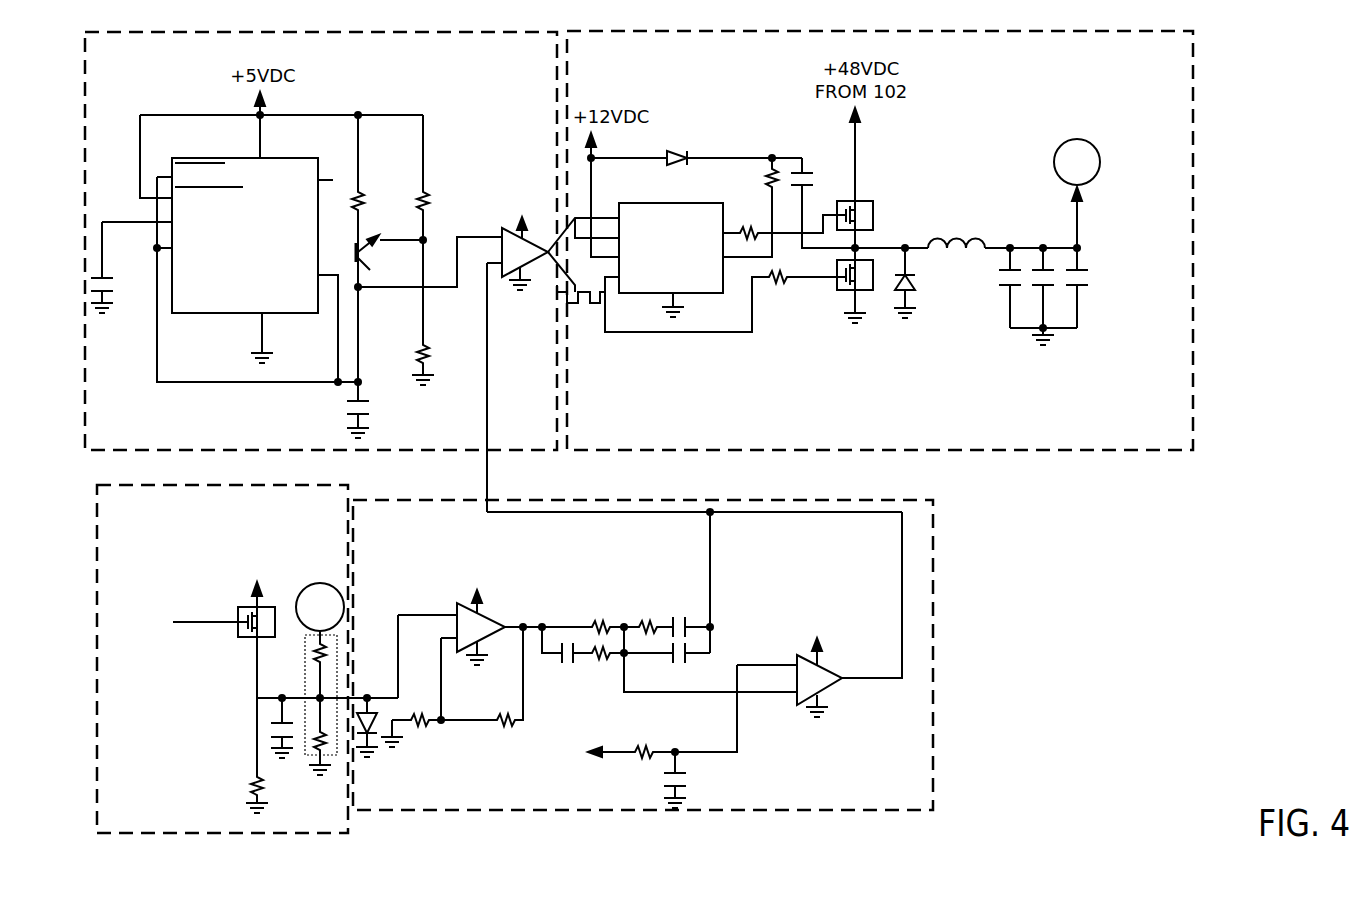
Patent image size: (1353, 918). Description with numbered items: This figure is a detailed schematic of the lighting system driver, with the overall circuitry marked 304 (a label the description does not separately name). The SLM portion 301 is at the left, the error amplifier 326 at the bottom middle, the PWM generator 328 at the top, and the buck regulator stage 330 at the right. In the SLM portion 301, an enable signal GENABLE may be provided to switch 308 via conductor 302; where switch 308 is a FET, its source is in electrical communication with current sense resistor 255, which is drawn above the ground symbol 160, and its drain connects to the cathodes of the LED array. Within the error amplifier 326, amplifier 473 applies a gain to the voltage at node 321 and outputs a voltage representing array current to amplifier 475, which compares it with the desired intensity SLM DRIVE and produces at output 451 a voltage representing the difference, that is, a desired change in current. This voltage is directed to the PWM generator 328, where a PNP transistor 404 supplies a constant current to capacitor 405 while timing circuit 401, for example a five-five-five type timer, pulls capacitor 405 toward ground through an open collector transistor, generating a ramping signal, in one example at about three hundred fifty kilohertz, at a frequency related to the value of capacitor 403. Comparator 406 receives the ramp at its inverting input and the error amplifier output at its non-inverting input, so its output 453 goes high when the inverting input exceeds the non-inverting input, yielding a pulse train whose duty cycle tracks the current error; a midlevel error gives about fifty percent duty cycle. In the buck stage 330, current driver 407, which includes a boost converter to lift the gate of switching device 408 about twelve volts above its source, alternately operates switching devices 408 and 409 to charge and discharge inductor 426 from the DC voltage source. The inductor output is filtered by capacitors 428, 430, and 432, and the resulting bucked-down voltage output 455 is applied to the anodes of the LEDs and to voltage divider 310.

The SLM portion 301 is at (196, 484).
The conductor 302 is at (176, 624).
The LED driver circuit 304 is at (922, 253).
The switch 308 is at (258, 638).
The voltage divider 310 is at (305, 690).
The node 321 is at (318, 712).
The error amplifier 326 is at (652, 500).
The PWM generator 328 is at (434, 451).
The buck regulator stage 330 is at (758, 451).
The current sense resistor 255 is at (262, 790).
The ground 160 is at (257, 812).
The timing circuit 401 is at (206, 313).
The capacitor 403 is at (107, 289).
The PNP transistor 404 is at (364, 250).
The capacitor 405 is at (364, 411).
The comparator 406 is at (505, 278).
The current driver 407 is at (699, 294).
The switching device 408 is at (871, 200).
The switching device 409 is at (853, 291).
The inductor 426 is at (958, 238).
The capacitor 428 is at (1005, 286).
The capacitor 430 is at (1040, 287).
The capacitor 432 is at (1083, 287).
The output 451 is at (826, 513).
The output 453 is at (582, 218).
The voltage output 455 is at (1081, 222).
The amplifier 473 is at (487, 614).
The amplifier 475 is at (826, 668).